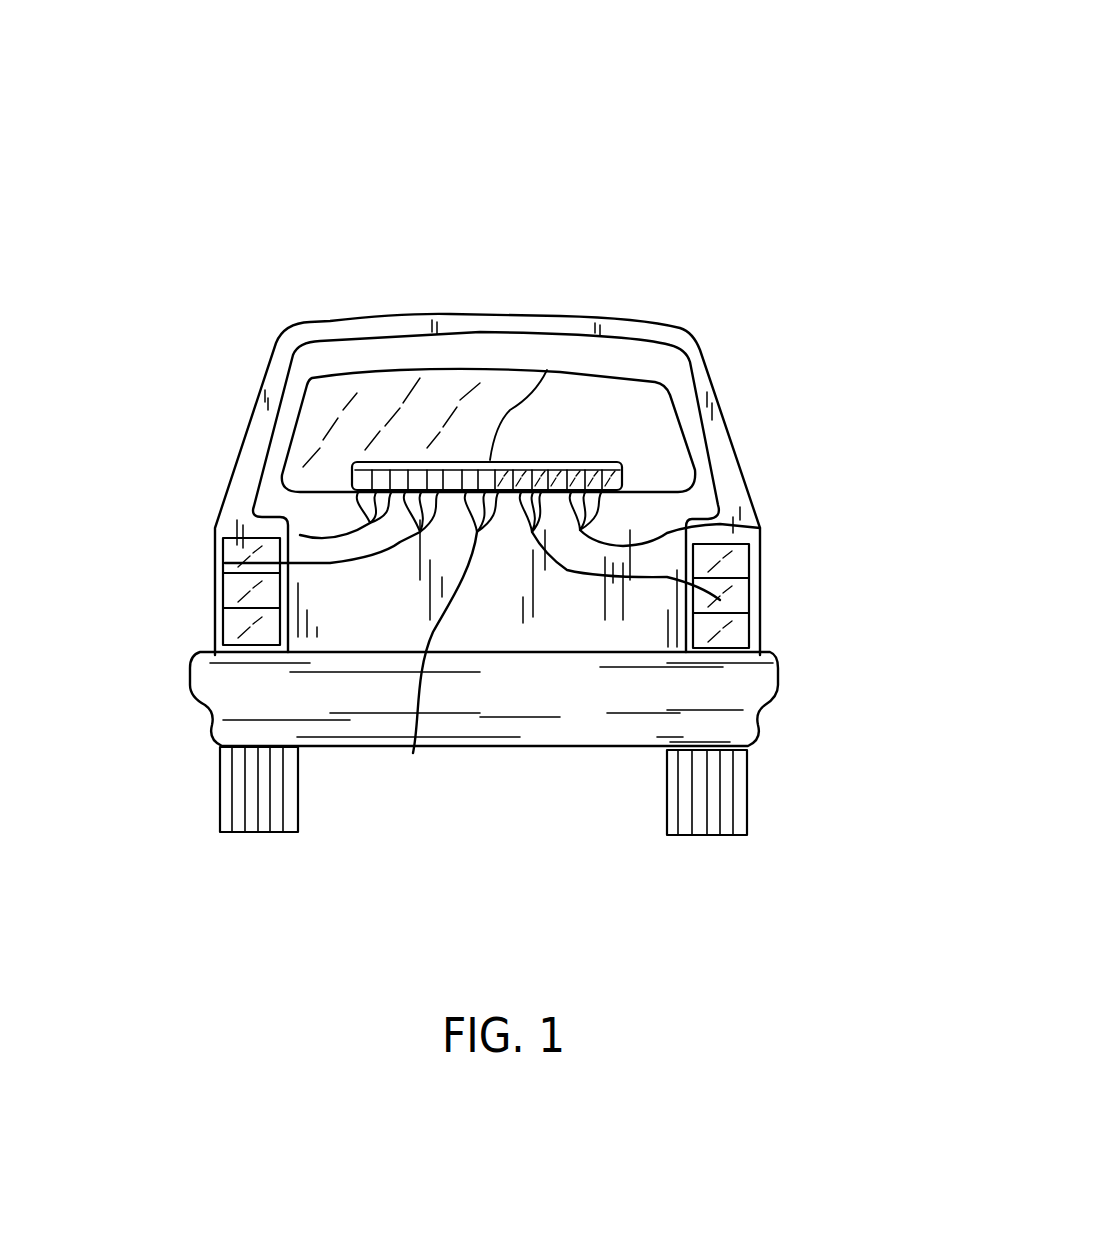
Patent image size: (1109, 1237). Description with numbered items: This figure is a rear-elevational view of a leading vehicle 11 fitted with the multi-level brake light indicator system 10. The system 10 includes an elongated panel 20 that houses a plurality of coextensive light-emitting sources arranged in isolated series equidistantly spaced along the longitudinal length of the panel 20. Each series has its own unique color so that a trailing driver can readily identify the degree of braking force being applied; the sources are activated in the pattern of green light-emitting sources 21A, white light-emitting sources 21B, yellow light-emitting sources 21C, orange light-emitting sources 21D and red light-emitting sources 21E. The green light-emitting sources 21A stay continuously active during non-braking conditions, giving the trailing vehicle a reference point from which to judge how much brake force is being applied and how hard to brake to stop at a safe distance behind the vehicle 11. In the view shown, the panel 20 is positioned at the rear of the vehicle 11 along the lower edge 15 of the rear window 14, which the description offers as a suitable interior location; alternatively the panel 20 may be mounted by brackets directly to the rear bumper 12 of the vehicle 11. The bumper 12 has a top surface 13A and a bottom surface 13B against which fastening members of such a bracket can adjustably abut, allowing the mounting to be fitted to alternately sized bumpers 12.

The system 10 is at (527, 133).
The leading vehicle 11 is at (562, 316).
The rear bumper 12 is at (777, 683).
The top surface of the bumper 13A is at (503, 652).
The bottom surface of the bumper 13B is at (520, 748).
The rear window 14 is at (653, 393).
The lower edge of the rear window 15 is at (668, 470).
The elongated panel 20 is at (622, 464).
The green light-emitting sources 21A is at (300, 535).
The white light-emitting sources 21B is at (225, 563).
The yellow light-emitting sources 21C is at (413, 753).
The orange light-emitting sources 21D is at (720, 600).
The red light-emitting sources 21E is at (760, 528).